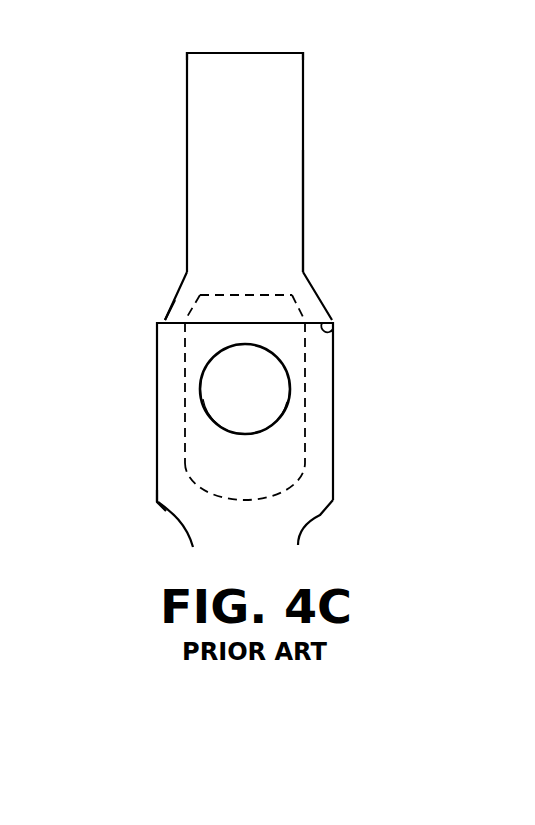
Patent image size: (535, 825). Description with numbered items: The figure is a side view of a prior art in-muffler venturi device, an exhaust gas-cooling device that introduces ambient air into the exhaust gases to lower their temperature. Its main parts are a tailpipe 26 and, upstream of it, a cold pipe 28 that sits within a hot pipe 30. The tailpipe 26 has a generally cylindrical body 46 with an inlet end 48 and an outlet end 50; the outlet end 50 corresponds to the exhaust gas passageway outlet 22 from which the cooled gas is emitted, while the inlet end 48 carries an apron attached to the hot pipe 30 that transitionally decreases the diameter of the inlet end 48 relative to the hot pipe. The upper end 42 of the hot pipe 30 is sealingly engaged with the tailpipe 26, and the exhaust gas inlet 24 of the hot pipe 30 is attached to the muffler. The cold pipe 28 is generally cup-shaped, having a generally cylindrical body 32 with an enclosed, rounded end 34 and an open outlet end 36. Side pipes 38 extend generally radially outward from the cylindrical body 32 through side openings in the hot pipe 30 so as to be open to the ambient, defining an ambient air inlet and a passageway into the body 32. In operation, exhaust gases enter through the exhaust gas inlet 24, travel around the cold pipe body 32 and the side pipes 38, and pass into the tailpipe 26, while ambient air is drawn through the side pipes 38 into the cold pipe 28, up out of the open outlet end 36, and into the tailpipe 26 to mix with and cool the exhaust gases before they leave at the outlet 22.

The exhaust gas passageway outlet 22 is at (213, 53).
The outlet end 50 is at (283, 53).
The tailpipe 26 is at (258, 122).
The cylindrical body 46 is at (260, 197).
The open outlet end 36 is at (247, 293).
The inlet end 48 is at (332, 325).
The cold pipe 28 is at (283, 340).
The upper end 42 is at (168, 320).
The side pipes 38 is at (247, 431).
The cylindrical body 32 is at (223, 457).
The enclosed, rounded end 34 is at (242, 499).
The exhaust gas inlet 24 is at (253, 537).
The hot pipe 30 is at (158, 502).